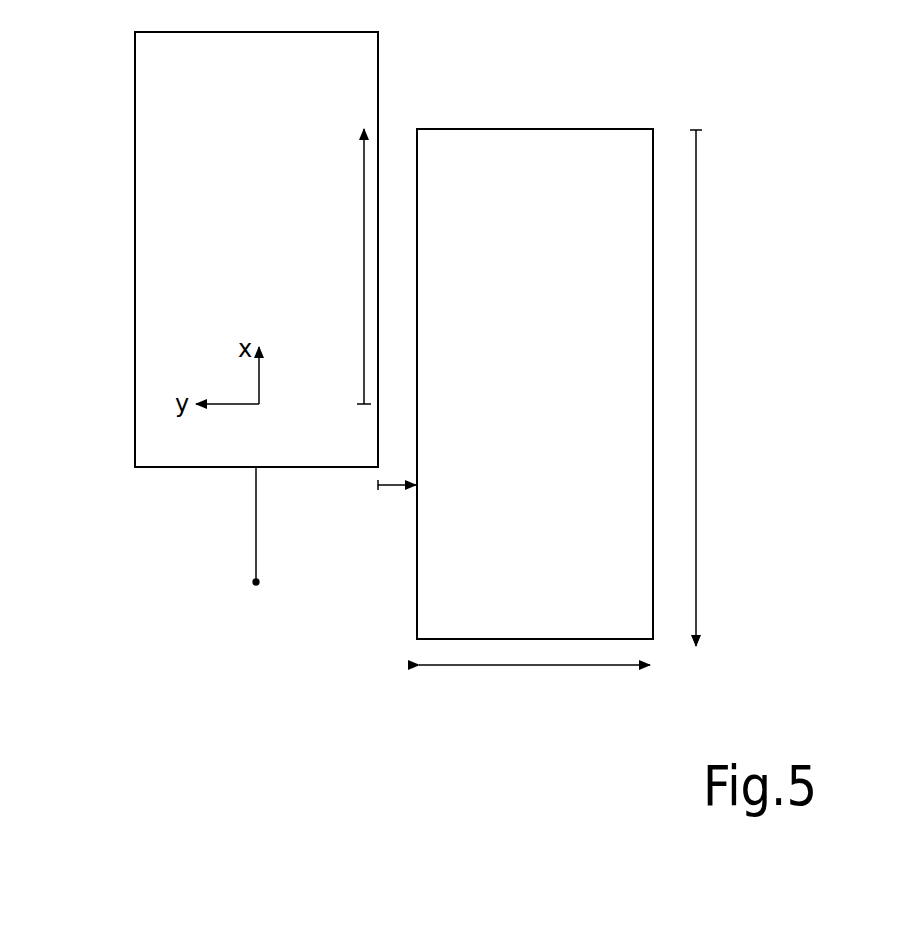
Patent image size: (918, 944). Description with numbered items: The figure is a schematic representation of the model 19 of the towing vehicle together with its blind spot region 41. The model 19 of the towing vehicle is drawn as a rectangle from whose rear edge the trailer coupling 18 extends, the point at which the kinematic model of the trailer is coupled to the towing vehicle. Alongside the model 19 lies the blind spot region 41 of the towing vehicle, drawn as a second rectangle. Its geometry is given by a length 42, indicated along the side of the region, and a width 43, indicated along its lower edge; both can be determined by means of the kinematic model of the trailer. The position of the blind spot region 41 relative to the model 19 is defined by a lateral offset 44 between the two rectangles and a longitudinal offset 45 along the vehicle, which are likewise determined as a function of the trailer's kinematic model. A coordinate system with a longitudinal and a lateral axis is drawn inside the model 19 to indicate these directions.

The trailer coupling 18 is at (256, 528).
The model of the towing vehicle 19 is at (135, 202).
The blind spot region 41 is at (532, 129).
The length 42 is at (696, 328).
The width 43 is at (530, 665).
The lateral offset 44 is at (388, 492).
The longitudinal offset 45 is at (364, 217).